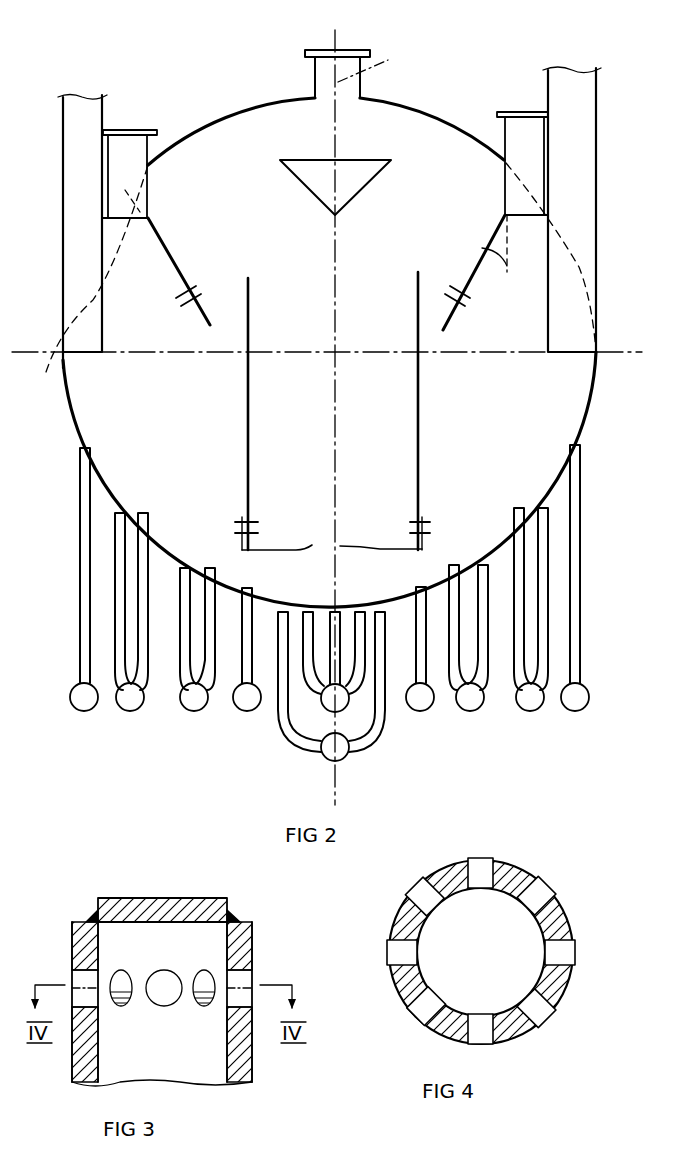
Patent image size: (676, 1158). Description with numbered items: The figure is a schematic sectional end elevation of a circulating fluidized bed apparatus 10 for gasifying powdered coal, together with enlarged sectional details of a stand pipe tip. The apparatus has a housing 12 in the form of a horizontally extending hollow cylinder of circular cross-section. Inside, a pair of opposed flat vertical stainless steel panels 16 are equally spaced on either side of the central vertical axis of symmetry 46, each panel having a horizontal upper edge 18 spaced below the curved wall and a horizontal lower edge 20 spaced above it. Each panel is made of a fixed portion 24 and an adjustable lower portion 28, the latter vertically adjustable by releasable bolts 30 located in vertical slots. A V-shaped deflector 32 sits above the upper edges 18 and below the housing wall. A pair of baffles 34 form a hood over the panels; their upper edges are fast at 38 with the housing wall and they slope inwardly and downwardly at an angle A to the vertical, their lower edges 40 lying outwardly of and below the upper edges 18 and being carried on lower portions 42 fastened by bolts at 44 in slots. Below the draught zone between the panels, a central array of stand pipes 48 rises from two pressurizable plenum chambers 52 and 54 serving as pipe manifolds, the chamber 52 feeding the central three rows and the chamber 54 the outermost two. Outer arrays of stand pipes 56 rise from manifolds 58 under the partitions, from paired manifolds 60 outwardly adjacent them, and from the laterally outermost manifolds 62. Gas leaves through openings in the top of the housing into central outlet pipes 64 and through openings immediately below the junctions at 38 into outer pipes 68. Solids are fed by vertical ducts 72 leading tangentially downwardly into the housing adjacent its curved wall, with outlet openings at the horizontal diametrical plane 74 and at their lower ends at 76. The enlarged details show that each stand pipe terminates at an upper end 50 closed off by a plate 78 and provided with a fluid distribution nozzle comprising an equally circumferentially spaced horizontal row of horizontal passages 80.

In FIG. 2, the circulating fluidized bed apparatus 10 is at (530, 46).
In FIG. 2, the housing 12 is at (428, 108).
In FIG. 2, the panels 16 is at (240, 440).
In FIG. 2, the upper edge 18 is at (408, 277).
In FIG. 2, the lower edge 20 is at (248, 556).
In FIG. 2, the fixed portion 24 is at (246, 416).
In FIG. 2, the adjustable lower portion 28 is at (332, 546).
In FIG. 2, the releasable bolts 30 is at (226, 532).
In FIG. 2, the V-shaped deflector 32 is at (306, 196).
In FIG. 2, the baffles 34 is at (214, 240).
In FIG. 2, the junction 38 is at (152, 197).
In FIG. 2, the lower edges 40 is at (209, 332).
In FIG. 2, the lower portions 42 is at (200, 318).
In FIG. 2, the bolts 44 is at (178, 306).
In FIG. 2, the central vertical axis of symmetry 46 is at (374, 60).
In FIG. 2, the stand pipes 48 is at (282, 706).
In FIG. 3, the stand pipes 48 is at (270, 962).
In FIG. 4, the stand pipes 48 is at (620, 900).
In FIG. 2, the upper ends 50 is at (145, 504).
In FIG. 3, the upper ends 50 is at (208, 876).
In FIG. 4, the upper ends 50 is at (578, 840).
In FIG. 2, the plenum chamber 52 is at (345, 738).
In FIG. 2, the plenum chamber 54 is at (329, 752).
In FIG. 2, the outer stand pipes 56 is at (118, 598).
In FIG. 2, the manifolds 58 is at (243, 702).
In FIG. 2, the manifolds 60 is at (190, 704).
In FIG. 2, the manifolds 62 is at (86, 702).
In FIG. 2, the pipes 64 is at (315, 80).
In FIG. 2, the pipes 68 is at (135, 150).
In FIG. 2, the vertical ducts 72 is at (78, 190).
In FIG. 2, the horizontal diametrical plane 74 is at (50, 365).
In FIG. 2, the outlet openings 76 is at (85, 362).
In FIG. 3, the plate 78 is at (160, 906).
In FIG. 3, the horizontal passages 80 is at (163, 974).
In FIG. 4, the horizontal passages 80 is at (525, 872).
In FIG. 2, the angle A is at (500, 250).